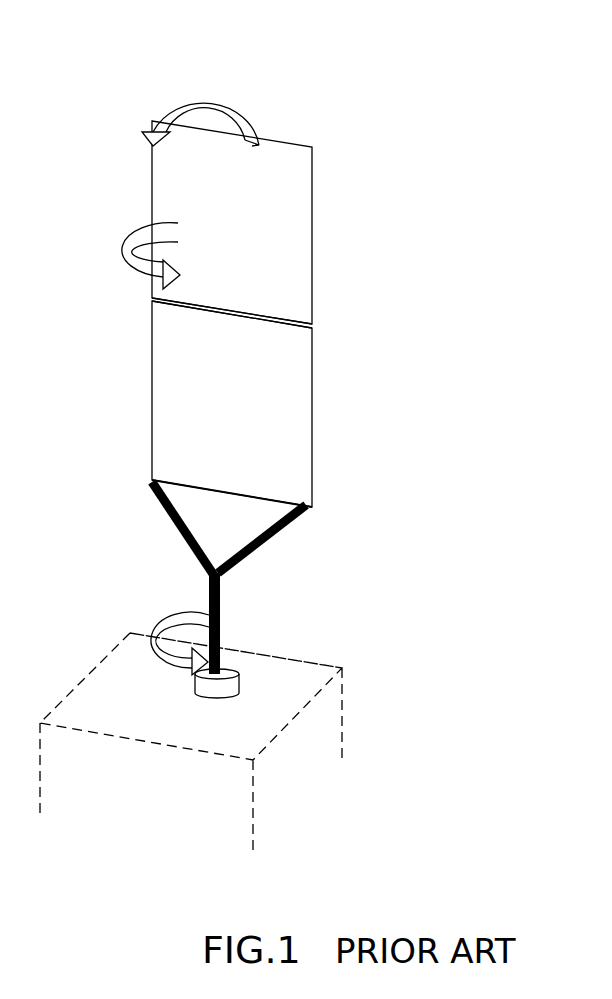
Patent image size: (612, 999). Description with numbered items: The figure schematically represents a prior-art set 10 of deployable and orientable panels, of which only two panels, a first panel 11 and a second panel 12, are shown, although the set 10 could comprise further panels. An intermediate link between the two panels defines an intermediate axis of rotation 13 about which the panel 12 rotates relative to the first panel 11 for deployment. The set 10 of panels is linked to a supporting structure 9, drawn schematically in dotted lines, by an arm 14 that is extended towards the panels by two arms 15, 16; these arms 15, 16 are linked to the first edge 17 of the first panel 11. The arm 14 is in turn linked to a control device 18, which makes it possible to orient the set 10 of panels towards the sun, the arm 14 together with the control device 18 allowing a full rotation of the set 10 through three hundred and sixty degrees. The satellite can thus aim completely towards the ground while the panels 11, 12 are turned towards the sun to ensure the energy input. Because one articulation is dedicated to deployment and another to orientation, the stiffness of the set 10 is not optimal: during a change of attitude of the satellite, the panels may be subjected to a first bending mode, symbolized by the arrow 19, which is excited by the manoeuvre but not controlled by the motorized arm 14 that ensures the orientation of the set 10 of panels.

The supporting structure 9 is at (312, 747).
The set of deployable and orientable panels 10 is at (274, 268).
The first panel 11 is at (313, 407).
The panel 12 is at (313, 222).
The intermediate axis of rotation 13 is at (313, 324).
The arm 14 is at (220, 622).
The arm 15 is at (170, 516).
The arm 16 is at (273, 536).
The first edge 17 is at (231, 490).
The control device 18 is at (239, 686).
The arrow 19 is at (167, 108).